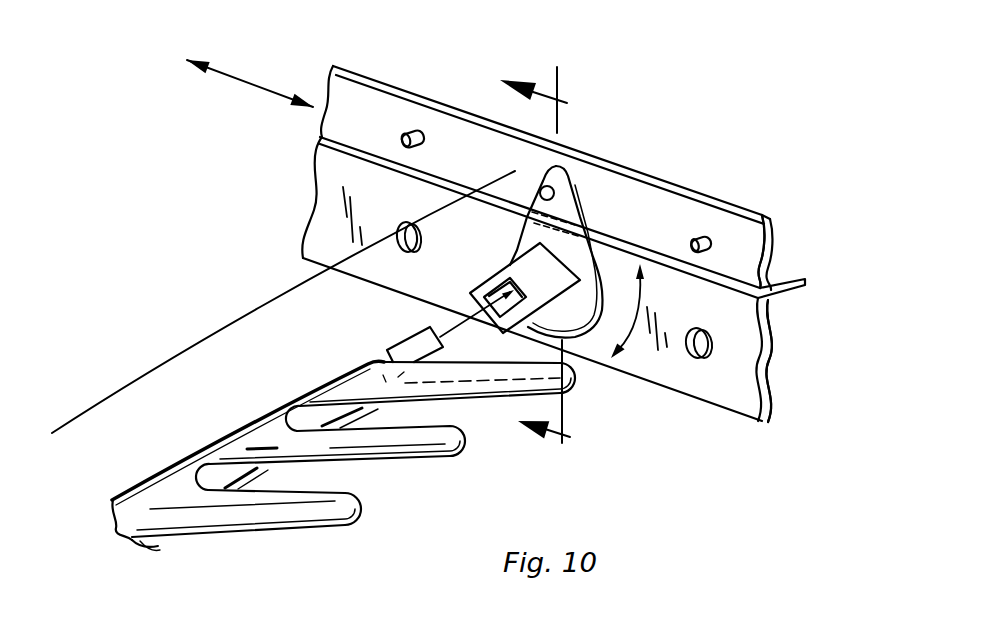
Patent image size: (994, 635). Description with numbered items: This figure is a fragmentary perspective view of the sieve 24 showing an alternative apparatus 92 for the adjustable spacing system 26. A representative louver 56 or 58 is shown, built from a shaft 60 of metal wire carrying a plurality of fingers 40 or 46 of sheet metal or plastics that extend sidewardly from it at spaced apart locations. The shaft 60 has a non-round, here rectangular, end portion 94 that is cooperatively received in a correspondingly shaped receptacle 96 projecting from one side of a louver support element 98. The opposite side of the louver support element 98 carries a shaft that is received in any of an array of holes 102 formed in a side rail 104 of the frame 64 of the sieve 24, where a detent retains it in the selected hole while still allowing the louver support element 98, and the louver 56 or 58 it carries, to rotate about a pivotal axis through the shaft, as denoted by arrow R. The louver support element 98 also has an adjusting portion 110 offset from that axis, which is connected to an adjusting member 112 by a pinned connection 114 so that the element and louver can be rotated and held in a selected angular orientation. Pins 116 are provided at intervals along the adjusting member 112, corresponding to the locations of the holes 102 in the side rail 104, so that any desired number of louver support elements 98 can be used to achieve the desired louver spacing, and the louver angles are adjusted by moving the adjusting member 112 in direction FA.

The sieve 24 is at (578, 244).
The frame 64 is at (806, 282).
The adjustable spacing system 26 is at (701, 141).
The fingers 40 is at (343, 451).
The fingers 46 is at (465, 449).
The louver 56 is at (182, 568).
The louver 58 is at (157, 543).
The shaft 60 is at (226, 437).
The alternative apparatus 92 is at (231, 332).
The end portion 94 is at (387, 350).
The receptacle 96 is at (489, 281).
The louver support element 98 is at (595, 212).
The holes 102 is at (404, 255).
The side rail 104 is at (773, 386).
The adjusting portion 110 is at (562, 169).
The adjusting member 112 is at (770, 211).
The pinned connection 114 is at (542, 196).
The pins 116 is at (411, 131).
The direction FA is at (252, 84).
The arrow R is at (638, 330).